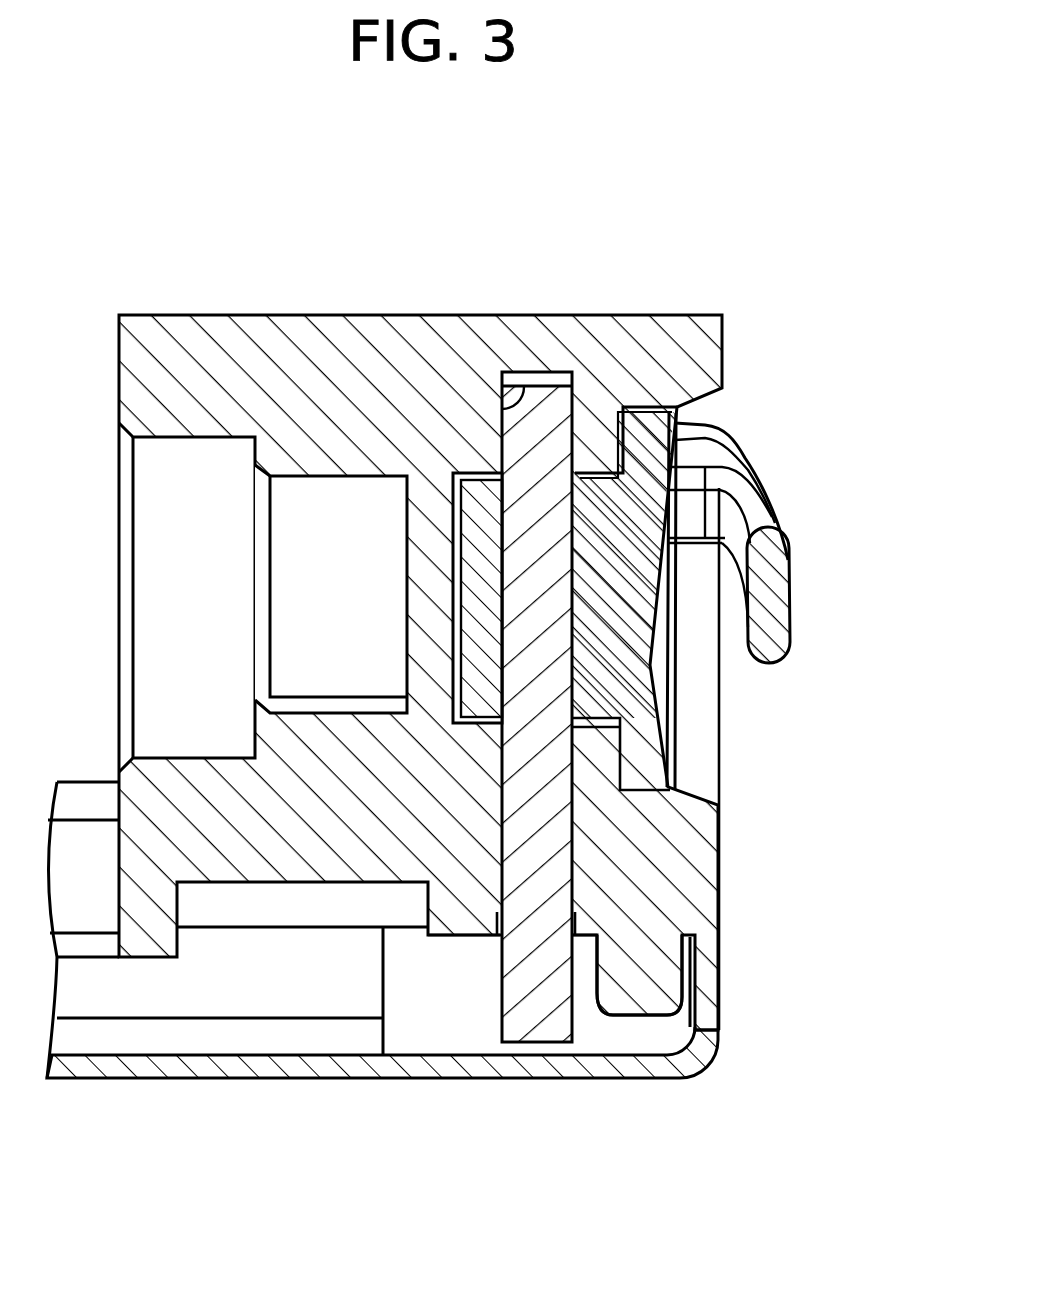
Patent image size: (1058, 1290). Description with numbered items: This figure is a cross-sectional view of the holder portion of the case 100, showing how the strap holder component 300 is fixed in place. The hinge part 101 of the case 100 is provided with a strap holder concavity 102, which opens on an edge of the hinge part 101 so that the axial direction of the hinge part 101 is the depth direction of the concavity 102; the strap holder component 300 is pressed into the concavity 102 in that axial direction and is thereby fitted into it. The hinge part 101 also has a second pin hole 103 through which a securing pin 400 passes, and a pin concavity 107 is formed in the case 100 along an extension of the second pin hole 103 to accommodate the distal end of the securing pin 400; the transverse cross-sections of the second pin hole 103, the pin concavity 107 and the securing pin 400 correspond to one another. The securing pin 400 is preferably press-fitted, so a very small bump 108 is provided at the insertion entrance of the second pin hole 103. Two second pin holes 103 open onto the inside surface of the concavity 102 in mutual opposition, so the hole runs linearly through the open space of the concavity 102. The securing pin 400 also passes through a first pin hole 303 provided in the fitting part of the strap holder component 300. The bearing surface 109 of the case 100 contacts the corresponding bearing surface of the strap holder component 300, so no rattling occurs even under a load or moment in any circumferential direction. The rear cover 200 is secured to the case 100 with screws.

The case 100 is at (743, 312).
The hinge part 101 is at (700, 362).
The strap holder concavity 102 is at (697, 758).
The second pin hole 103 is at (568, 895).
The pin concavity 107 is at (517, 388).
The bump 108 is at (567, 925).
The bearing surface 109 is at (618, 432).
The rear cover 200 is at (360, 1082).
The strap holder component 300 is at (779, 512).
The first pin hole 303 is at (583, 620).
The securing pin 400 is at (533, 1002).